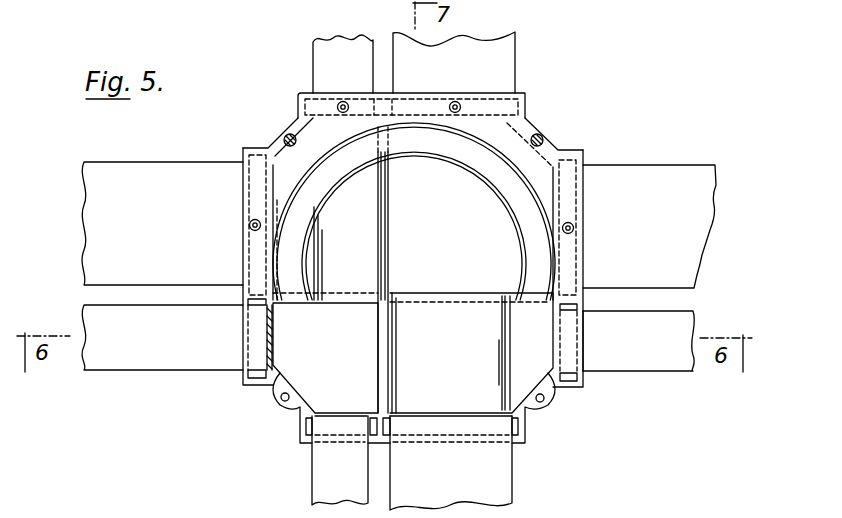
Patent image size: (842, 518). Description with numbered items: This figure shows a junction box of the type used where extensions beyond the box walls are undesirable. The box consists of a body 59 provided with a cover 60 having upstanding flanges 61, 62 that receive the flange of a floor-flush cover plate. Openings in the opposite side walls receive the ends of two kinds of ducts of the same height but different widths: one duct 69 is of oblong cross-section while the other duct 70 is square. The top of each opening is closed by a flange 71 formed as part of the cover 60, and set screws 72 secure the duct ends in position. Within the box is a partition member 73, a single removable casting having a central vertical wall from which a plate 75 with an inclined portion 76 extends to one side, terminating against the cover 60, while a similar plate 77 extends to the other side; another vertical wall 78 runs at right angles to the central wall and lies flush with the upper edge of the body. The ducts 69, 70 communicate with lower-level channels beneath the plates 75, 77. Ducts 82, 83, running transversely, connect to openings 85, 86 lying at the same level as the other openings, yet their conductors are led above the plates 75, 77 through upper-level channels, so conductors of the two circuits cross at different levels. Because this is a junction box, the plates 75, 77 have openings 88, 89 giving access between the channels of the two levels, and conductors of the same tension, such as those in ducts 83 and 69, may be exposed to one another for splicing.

The body 59 is at (553, 395).
The cover 60 is at (313, 140).
The upstanding flange 61 is at (483, 170).
The upstanding flange 62 is at (485, 140).
The duct 69 is at (662, 172).
The duct 70 is at (638, 363).
The flange 71 is at (584, 222).
The set screws 72 is at (570, 233).
The partition member 73 is at (390, 293).
The plate 75 is at (455, 313).
The inclined portion 76 is at (518, 372).
The plate 77 is at (343, 222).
The vertical wall 78 is at (389, 212).
The duct 82 is at (320, 472).
The duct 83 is at (497, 487).
The opening 85 is at (267, 347).
The opening 86 is at (270, 170).
The opening 88 is at (320, 338).
The opening 89 is at (475, 213).